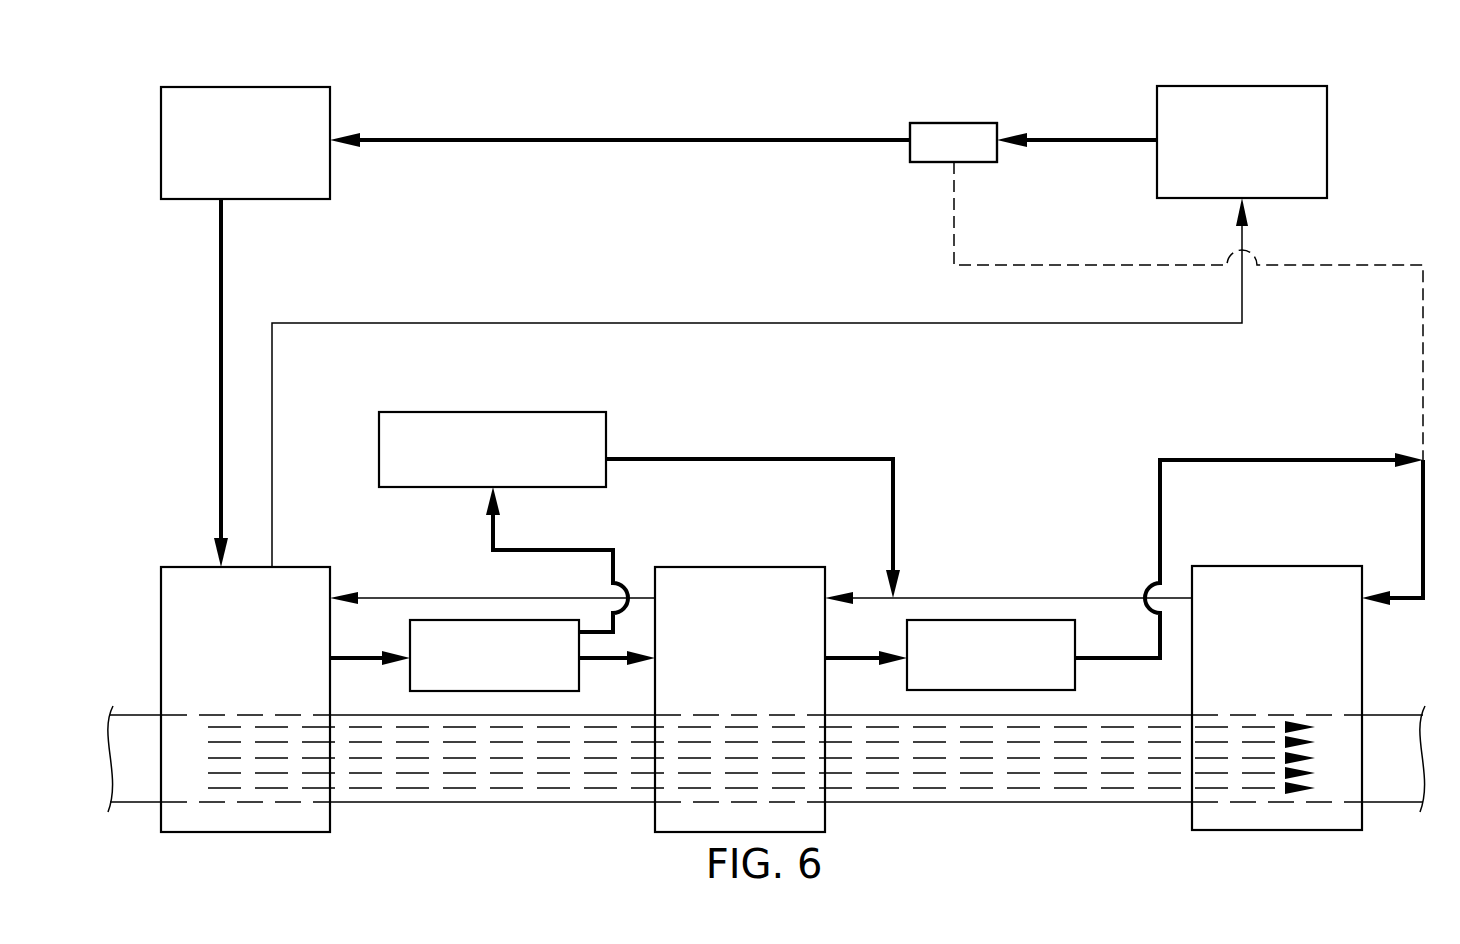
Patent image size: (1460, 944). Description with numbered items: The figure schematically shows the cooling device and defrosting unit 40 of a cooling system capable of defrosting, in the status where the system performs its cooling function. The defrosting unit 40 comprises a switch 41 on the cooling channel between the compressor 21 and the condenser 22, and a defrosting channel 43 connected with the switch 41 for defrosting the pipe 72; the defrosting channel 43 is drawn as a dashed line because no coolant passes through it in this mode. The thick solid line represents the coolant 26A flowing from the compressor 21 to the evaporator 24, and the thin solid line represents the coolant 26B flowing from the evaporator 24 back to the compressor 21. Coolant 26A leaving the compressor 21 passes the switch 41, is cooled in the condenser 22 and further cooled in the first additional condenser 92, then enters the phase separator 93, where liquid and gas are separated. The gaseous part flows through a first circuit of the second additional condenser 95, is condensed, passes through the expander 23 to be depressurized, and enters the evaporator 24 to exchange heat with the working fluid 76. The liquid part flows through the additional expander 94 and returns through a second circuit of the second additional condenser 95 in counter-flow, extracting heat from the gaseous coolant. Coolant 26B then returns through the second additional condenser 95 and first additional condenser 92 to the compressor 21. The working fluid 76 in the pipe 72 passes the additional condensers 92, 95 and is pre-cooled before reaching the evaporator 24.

The compressor 21 is at (1299, 86).
The condenser 22 is at (302, 87).
The expander 23 is at (990, 620).
The evaporator 24 is at (1228, 566).
The coolant flowing from the compressor to the evaporator 26A is at (756, 140).
The coolant flowing from the evaporator to the compressor 26B is at (1108, 598).
The defrosting unit 40 is at (943, 92).
The switch 41 is at (968, 123).
The defrosting channel 43 is at (1423, 322).
The pipe 72 is at (1125, 802).
The working fluid 76 is at (410, 802).
The first additional condenser 92 is at (175, 567).
The liquid/vapor phase separator 93 is at (438, 620).
The additional expander 94 is at (379, 424).
The second additional condenser 95 is at (740, 567).